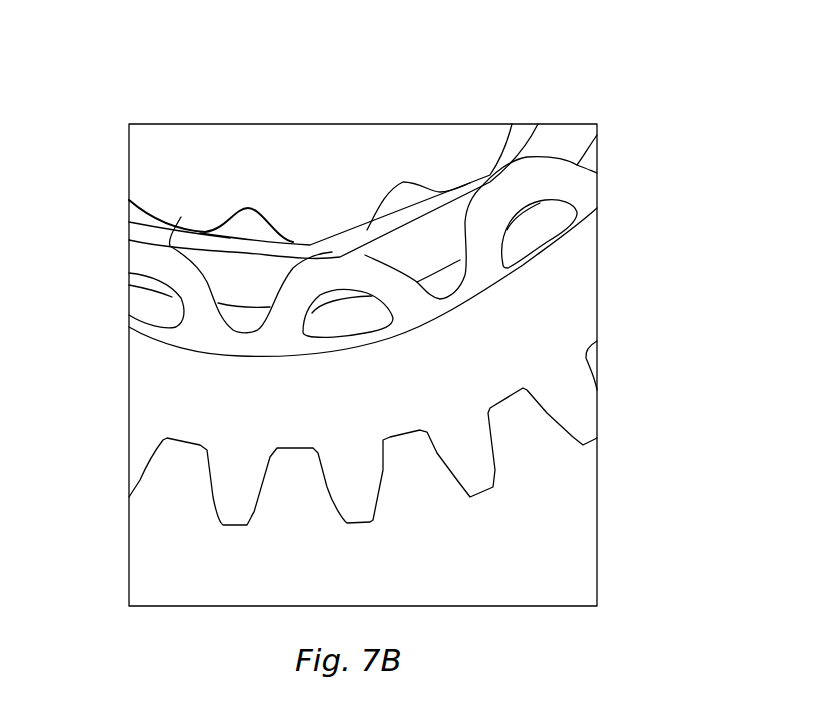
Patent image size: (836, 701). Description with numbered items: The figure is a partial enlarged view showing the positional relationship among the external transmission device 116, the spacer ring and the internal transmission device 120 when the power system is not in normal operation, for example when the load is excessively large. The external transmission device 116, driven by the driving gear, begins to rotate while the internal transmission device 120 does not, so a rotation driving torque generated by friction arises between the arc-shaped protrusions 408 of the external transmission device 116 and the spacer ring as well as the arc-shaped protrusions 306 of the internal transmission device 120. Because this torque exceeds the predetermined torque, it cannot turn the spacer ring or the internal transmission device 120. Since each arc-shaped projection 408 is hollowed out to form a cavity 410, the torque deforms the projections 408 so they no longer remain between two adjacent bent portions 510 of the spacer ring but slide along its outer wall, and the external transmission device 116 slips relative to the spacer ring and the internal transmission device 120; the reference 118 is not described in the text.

The external transmission device 116 is at (570, 405).
The chain 118 is at (522, 135).
The internal transmission device 120 is at (165, 153).
The arc-shaped protrusions 306 is at (128, 240).
The arc-shaped protrusions 408 is at (325, 278).
The cavity 410 is at (340, 322).
The bent portions 510 is at (343, 247).